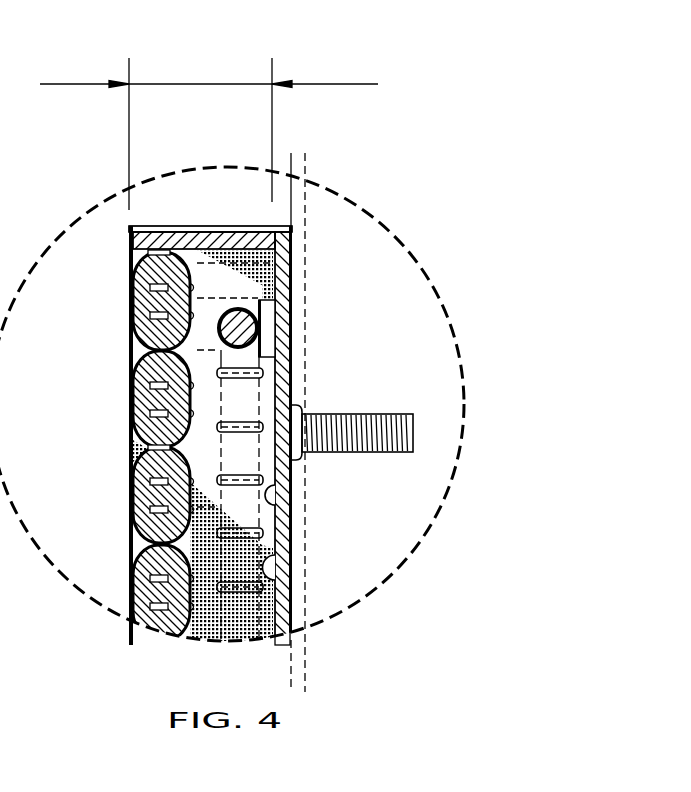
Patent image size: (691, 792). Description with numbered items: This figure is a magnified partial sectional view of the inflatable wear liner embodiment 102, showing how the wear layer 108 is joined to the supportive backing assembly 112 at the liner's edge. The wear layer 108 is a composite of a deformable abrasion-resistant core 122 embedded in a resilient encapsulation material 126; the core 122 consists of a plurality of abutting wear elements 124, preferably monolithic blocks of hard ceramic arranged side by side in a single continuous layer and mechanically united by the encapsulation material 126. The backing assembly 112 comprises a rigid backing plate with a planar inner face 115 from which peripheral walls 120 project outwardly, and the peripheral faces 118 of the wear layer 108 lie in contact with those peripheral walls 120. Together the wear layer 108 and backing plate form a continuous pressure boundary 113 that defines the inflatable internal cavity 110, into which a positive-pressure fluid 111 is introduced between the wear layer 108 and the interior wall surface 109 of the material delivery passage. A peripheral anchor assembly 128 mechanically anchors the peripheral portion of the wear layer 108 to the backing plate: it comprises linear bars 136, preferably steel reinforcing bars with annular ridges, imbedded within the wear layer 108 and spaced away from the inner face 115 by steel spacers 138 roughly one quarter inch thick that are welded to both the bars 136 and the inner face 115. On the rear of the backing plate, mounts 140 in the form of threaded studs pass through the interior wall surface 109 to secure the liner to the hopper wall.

The inflatable wear liner embodiment 102 is at (313, 238).
The wear layer 108 is at (198, 84).
The interior wall surface 109 is at (305, 648).
The inflatable internal cavity 110 is at (131, 519).
The positive-pressure fluid 111 is at (10, 572).
The backing assembly 112 is at (290, 513).
The pressure boundary 113 is at (270, 490).
The inner face 115 is at (275, 583).
The peripheral faces 118 is at (217, 232).
The peripheral walls 120 is at (192, 230).
The abrasion-resistant core 122 is at (123, 470).
The wear elements 124 is at (131, 300).
The resilient encapsulation material 126 is at (200, 628).
The peripheral anchor assembly 128 is at (273, 378).
The linear bars 136 is at (262, 334).
The steel spacers 138 is at (275, 343).
The mounts 140 is at (403, 412).